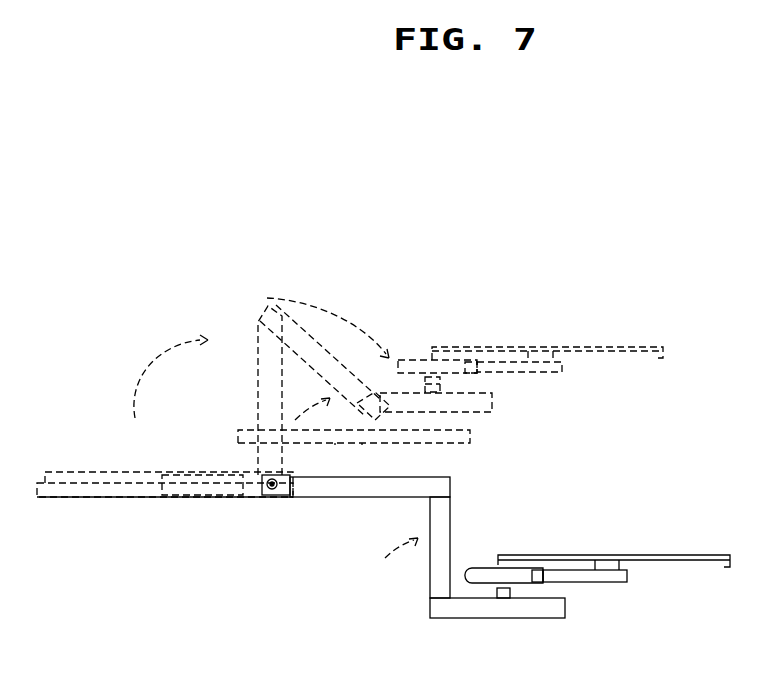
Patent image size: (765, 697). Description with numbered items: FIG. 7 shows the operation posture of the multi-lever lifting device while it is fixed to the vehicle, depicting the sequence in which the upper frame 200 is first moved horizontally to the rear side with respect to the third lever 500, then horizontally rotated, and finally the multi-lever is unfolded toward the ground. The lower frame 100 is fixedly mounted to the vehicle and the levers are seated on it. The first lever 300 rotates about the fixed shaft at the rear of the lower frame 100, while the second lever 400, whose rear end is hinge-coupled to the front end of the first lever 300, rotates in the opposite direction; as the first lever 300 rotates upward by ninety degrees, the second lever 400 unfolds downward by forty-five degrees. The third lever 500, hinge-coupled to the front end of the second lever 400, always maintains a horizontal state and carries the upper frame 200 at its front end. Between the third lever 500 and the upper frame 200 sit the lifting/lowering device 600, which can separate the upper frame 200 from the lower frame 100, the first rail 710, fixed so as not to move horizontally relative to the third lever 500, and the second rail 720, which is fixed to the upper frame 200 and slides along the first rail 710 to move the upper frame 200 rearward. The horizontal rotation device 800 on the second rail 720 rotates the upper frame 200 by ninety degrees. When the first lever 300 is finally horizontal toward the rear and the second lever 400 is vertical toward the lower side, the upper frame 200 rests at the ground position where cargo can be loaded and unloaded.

The lower frame 100 is at (192, 497).
The upper frame 200 is at (655, 553).
The first lever 300 is at (67, 488).
The second lever 400 is at (328, 358).
The third lever 500 is at (233, 480).
The lifting/lowering device 600 is at (505, 598).
The first rail 710 is at (205, 450).
The second rail 720 is at (592, 562).
The horizontal rotation device 800 is at (617, 580).